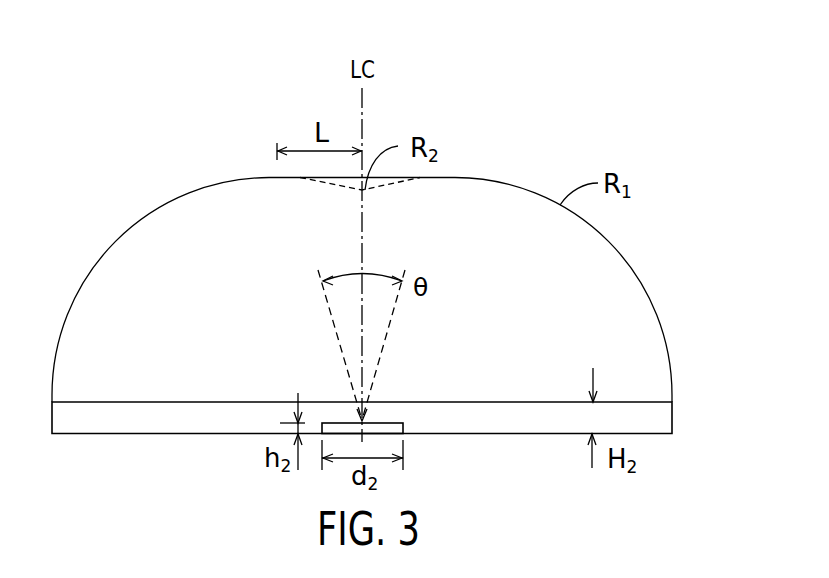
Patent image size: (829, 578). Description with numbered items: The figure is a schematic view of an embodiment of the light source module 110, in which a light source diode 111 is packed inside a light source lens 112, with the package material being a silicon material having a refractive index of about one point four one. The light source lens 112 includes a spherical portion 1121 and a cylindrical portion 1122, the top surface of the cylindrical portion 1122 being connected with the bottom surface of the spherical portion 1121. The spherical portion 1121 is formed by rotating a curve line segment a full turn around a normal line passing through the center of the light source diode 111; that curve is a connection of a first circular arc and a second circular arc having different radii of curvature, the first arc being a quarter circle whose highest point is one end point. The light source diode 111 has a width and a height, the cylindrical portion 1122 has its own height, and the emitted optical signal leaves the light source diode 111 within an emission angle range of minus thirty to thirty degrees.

The light source module 110 is at (562, 143).
The light source diode 111 is at (403, 428).
The light source lens 112 is at (757, 295).
The spherical portion 1121 is at (643, 315).
The cylindrical portion 1122 is at (657, 420).